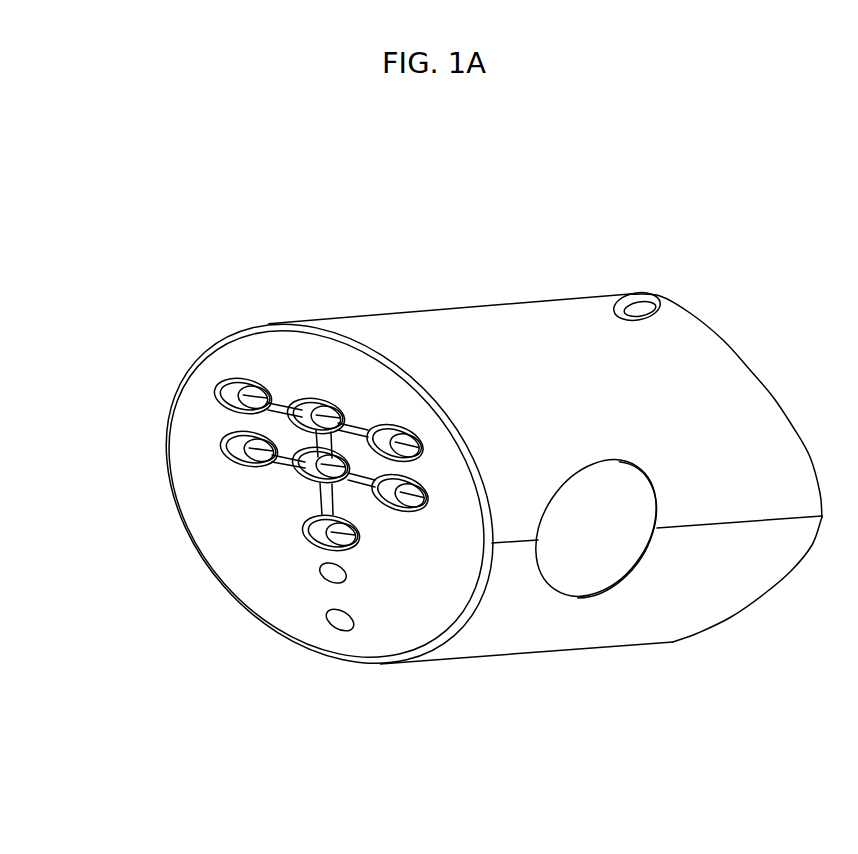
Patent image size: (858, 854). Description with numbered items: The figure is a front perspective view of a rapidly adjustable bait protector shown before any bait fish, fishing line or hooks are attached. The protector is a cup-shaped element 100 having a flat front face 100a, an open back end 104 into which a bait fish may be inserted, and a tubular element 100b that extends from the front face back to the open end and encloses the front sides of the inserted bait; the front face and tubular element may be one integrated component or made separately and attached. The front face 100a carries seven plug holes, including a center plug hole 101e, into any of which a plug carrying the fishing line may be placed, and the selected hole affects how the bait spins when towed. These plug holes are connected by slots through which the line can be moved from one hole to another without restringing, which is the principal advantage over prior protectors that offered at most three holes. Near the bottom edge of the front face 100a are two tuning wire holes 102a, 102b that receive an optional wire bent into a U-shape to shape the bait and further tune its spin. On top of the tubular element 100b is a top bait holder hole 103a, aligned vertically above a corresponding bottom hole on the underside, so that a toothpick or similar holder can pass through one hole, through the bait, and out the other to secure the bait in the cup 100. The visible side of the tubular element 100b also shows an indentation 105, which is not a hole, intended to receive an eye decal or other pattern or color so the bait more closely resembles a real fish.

The cup-shaped element 100 is at (490, 182).
The front face 100a is at (257, 573).
The tubular element 100b is at (580, 625).
The center plug hole 101e is at (337, 470).
The tuning wire hole 102a is at (337, 572).
The tuning wire hole 102b is at (337, 622).
The top bait holder hole 103a is at (636, 305).
The open back end 104 is at (798, 354).
The indentation 105 is at (623, 537).